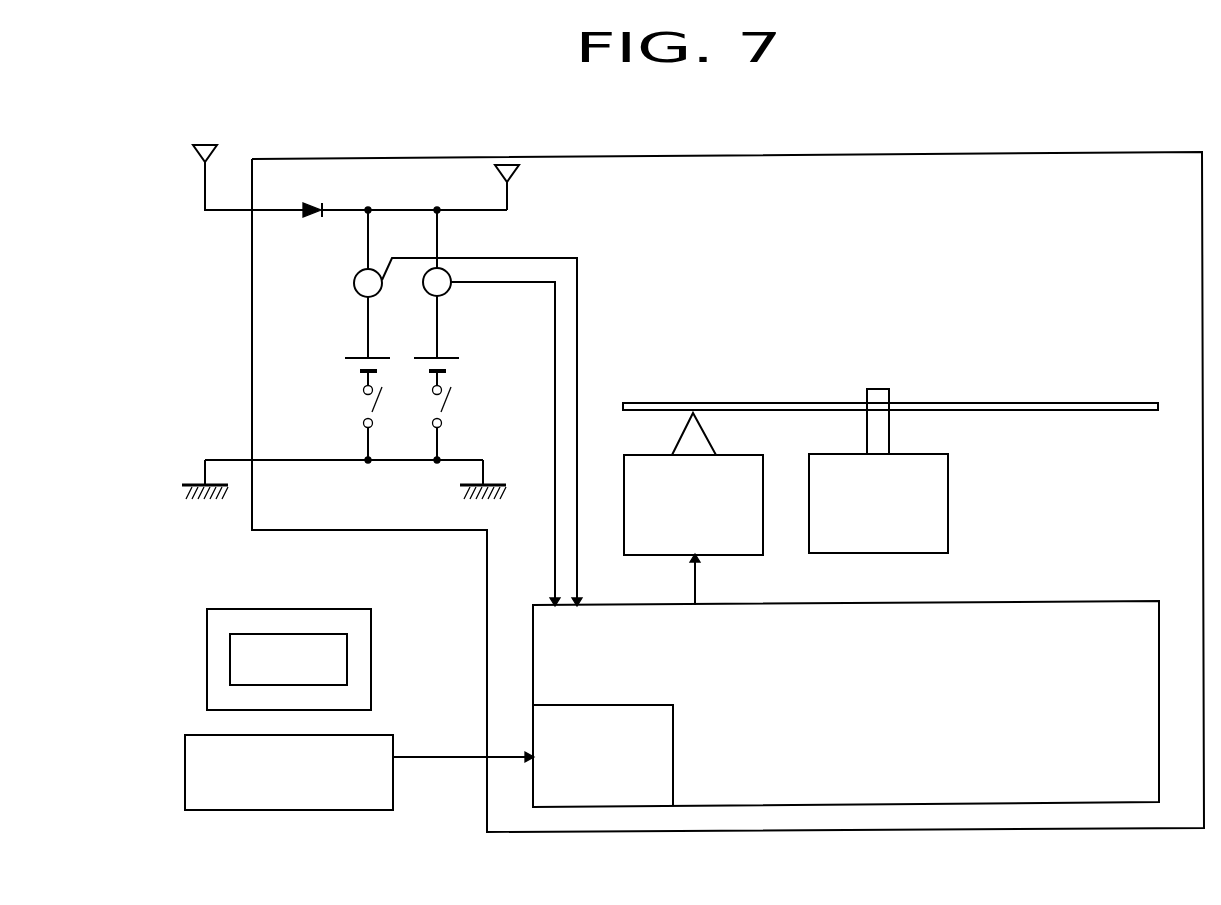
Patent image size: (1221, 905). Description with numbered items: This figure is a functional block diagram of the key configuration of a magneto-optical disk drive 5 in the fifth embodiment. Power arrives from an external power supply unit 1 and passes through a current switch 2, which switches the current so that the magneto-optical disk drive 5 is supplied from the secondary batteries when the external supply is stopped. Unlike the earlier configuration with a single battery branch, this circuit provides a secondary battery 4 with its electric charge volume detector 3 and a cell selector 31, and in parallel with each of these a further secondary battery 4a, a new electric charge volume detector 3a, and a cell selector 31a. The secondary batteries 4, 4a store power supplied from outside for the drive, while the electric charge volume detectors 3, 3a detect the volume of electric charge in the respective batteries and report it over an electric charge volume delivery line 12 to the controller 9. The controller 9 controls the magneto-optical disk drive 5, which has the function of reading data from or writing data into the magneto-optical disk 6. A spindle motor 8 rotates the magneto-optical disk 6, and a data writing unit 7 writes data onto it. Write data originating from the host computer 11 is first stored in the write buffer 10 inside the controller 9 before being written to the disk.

The external power supply unit 1 is at (215, 142).
The current switch 2 is at (308, 207).
The electric charge volume detector 3 is at (451, 292).
The electric charge volume detector 3a is at (356, 279).
The secondary battery 4 is at (450, 372).
The secondary battery 4a is at (350, 369).
The magneto-optical disk drive 5 is at (787, 158).
The magneto-optical disk 6 is at (648, 403).
The data writing unit 7 is at (630, 456).
The spindle motor 8 is at (838, 456).
The controller 9 is at (909, 604).
The write buffer 10 is at (584, 709).
The host computer 11 is at (334, 832).
The electric charge volume delivery line 12 is at (578, 305).
The cell selector 31 is at (446, 422).
The cell selector 31a is at (361, 422).